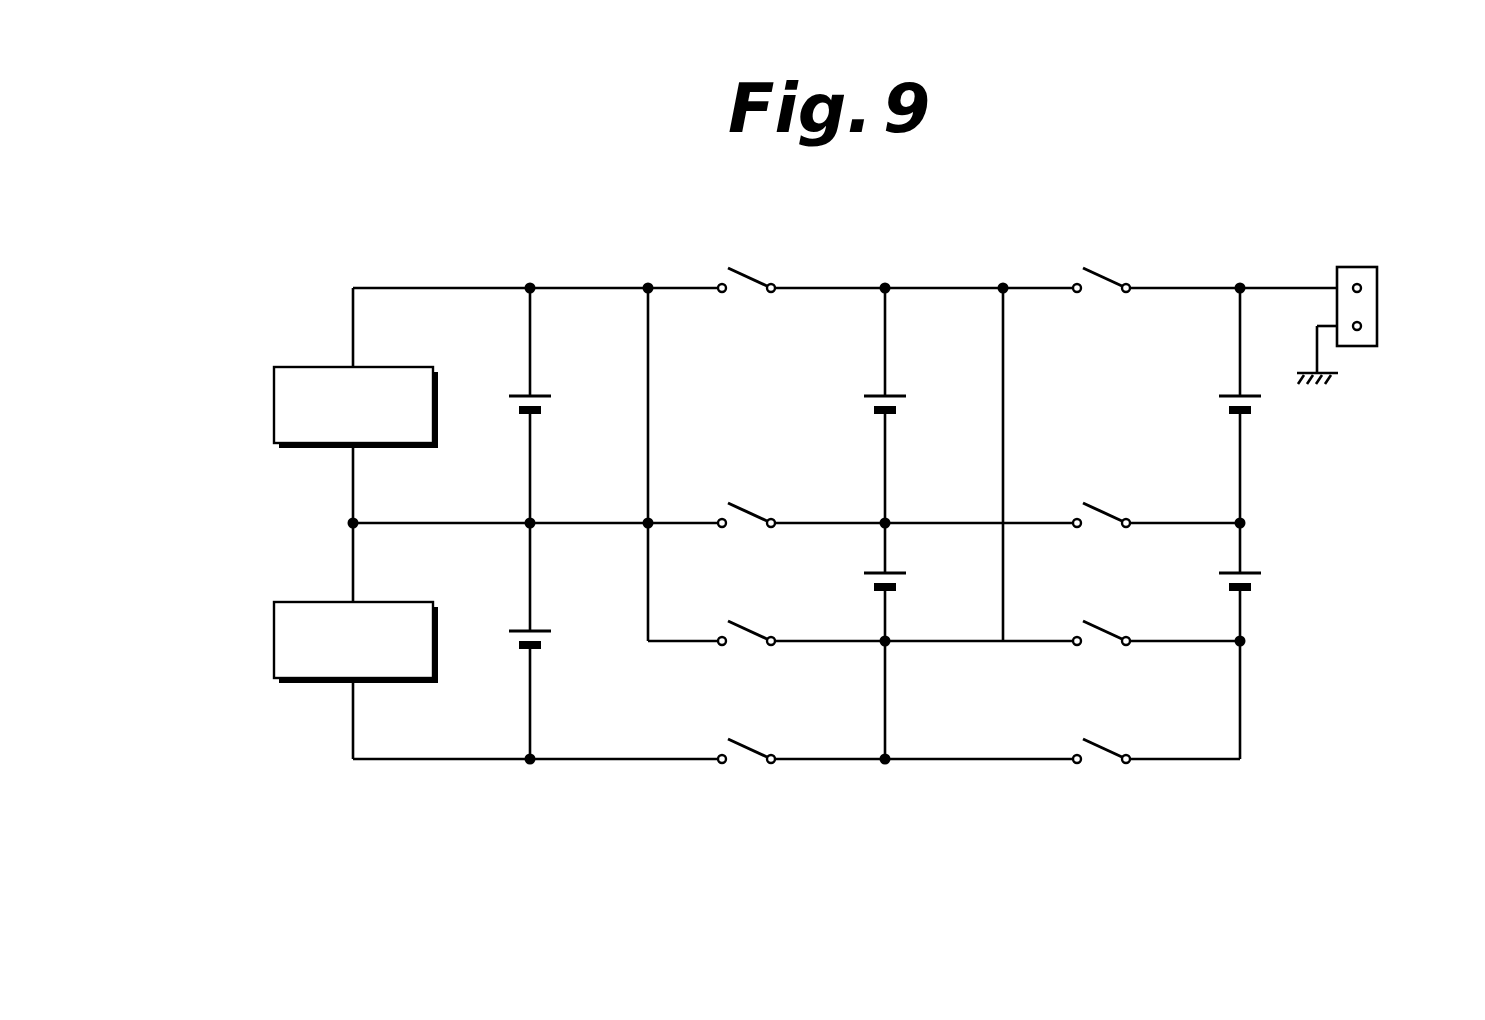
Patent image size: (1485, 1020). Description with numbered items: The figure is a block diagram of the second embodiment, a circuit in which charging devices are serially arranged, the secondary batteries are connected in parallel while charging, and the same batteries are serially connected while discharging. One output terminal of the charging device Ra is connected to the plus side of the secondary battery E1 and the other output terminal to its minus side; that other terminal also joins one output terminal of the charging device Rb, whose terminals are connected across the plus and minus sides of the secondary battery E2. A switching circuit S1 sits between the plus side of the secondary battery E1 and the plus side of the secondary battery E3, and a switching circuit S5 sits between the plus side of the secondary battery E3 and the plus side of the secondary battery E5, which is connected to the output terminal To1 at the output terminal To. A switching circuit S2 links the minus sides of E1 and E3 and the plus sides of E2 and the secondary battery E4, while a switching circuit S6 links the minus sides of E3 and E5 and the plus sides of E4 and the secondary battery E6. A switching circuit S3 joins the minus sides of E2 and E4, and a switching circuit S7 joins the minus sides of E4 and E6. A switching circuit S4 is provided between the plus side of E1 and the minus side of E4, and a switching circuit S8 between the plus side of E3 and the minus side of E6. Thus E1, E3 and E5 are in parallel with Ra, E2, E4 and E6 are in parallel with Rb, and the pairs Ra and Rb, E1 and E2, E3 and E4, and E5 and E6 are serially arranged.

The charging device Ra is at (274, 413).
The charging device Rb is at (274, 648).
The secondary battery E1 is at (552, 404).
The secondary battery E2 is at (552, 640).
The secondary battery E3 is at (907, 404).
The secondary battery E4 is at (907, 582).
The secondary battery E5 is at (1262, 404).
The secondary battery E6 is at (1262, 582).
The switching circuit S1 is at (748, 266).
The switching circuit S2 is at (748, 501).
The switching circuit S3 is at (745, 762).
The switching circuit S4 is at (748, 619).
The switching circuit S5 is at (1103, 266).
The switching circuit S6 is at (1103, 501).
The switching circuit S7 is at (1100, 762).
The switching circuit S8 is at (1103, 619).
The output terminal To is at (1356, 266).
The output terminal To1 is at (1366, 287).